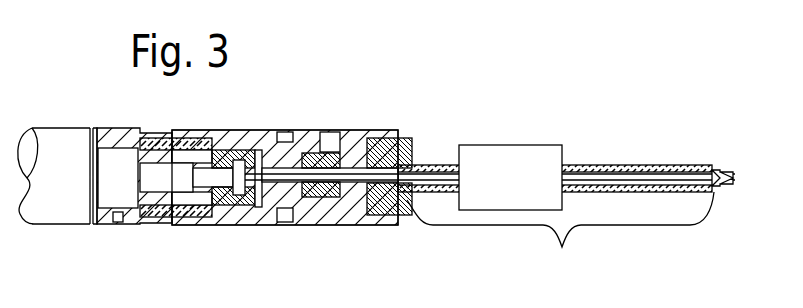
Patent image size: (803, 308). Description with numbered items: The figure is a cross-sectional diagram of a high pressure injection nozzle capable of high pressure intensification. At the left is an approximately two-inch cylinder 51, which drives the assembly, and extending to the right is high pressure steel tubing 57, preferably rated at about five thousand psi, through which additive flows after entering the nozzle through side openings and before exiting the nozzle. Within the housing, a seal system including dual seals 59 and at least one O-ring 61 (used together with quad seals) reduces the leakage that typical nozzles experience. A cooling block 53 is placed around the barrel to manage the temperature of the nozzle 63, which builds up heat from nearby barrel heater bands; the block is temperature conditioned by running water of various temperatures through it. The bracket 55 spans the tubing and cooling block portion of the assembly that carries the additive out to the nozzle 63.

The cylinder 51 is at (607, 177).
The cooling block 53 is at (509, 145).
The probe assembly 55 is at (562, 248).
The high pressure steel tubing 57 is at (667, 167).
The dual seals 59 is at (314, 160).
The O-ring 61 is at (395, 210).
The nozzle 63 is at (745, 182).